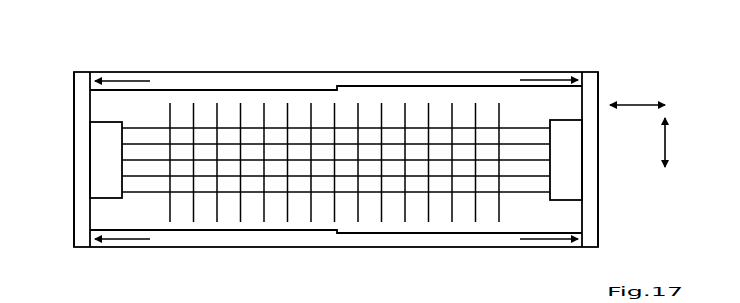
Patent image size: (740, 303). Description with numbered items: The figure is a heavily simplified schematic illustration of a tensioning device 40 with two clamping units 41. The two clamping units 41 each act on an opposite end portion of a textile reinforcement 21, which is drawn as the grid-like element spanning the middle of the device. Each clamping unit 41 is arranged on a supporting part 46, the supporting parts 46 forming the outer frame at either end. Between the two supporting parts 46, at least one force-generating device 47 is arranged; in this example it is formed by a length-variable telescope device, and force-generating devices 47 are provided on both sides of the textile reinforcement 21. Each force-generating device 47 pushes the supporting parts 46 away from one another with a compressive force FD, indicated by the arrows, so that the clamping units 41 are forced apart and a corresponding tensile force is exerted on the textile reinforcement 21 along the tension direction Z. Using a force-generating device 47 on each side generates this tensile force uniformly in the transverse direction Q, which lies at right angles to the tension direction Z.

The tensioning device 40 is at (604, 68).
The clamping unit 41 is at (107, 147).
The supporting part 46 is at (84, 100).
The force-generating device 47 is at (318, 72).
The textile reinforcement 21 is at (420, 103).
The compressive force FD is at (125, 78).
The tension direction Z is at (633, 100).
The transverse direction Q is at (667, 130).